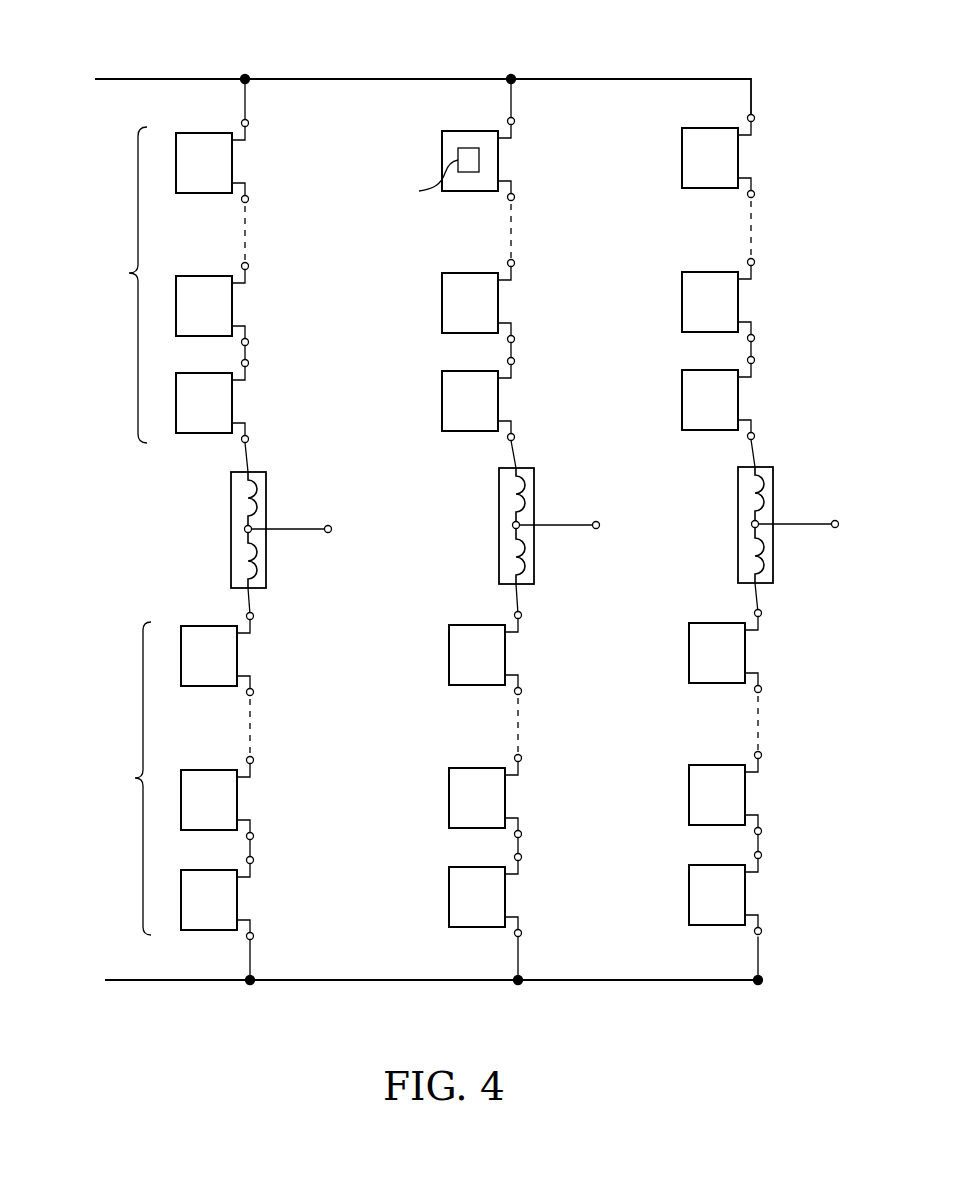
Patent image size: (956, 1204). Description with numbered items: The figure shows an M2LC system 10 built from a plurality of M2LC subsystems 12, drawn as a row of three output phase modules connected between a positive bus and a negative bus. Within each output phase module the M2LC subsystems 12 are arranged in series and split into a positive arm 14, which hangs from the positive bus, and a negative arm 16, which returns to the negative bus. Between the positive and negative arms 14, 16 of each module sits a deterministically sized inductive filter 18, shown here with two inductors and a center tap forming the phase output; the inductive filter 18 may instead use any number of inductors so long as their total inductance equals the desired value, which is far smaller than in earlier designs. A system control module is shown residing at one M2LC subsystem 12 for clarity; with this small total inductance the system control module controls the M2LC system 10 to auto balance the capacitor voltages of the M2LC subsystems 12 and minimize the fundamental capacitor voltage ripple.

The M2LC system 10 is at (571, 57).
The M2LC subsystem 12 is at (213, 173).
The positive arm 14 is at (128, 273).
The negative arm 16 is at (135, 778).
The inductive filter 18 is at (266, 495).